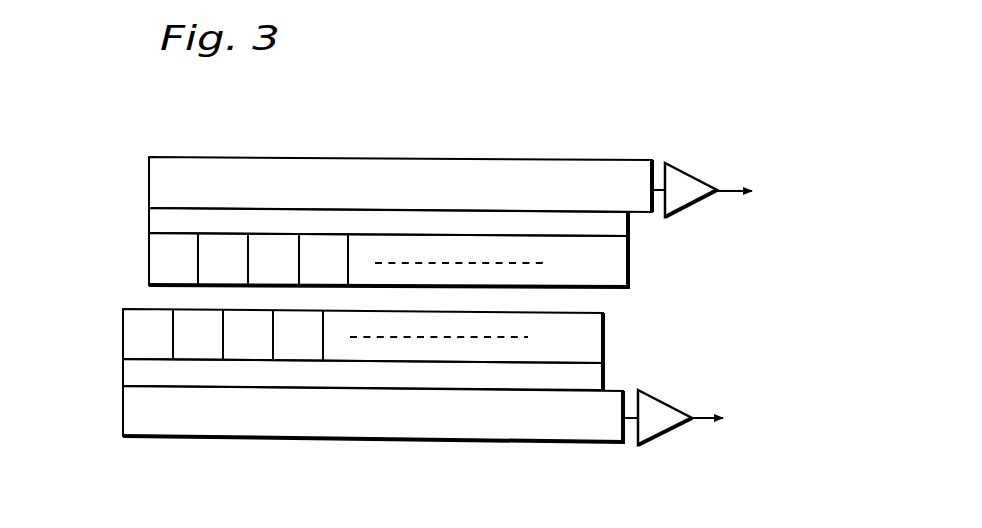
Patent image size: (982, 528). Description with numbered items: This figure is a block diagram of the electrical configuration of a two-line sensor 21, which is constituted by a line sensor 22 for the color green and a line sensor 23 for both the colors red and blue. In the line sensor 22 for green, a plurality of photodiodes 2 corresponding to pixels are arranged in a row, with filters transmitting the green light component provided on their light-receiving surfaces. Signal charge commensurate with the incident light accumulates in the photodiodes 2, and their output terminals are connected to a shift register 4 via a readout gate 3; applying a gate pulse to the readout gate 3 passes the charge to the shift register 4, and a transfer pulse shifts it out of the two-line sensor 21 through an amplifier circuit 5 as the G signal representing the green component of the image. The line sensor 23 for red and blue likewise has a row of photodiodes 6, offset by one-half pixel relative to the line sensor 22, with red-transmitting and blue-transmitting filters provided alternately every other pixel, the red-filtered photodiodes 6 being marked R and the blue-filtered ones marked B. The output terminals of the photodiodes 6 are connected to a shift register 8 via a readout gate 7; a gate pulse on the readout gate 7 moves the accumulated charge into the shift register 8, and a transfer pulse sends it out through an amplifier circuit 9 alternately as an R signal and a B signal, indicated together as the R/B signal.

The photodiodes 2 is at (153, 249).
The readout gate 3 is at (153, 216).
The shift register 4 is at (190, 163).
The amplifier circuit 5 is at (701, 181).
The photodiodes 6 is at (187, 315).
The readout gate 7 is at (127, 368).
The shift register 8 is at (127, 412).
The amplifier circuit 9 is at (679, 411).
The two-line sensor 21 is at (439, 120).
The line sensor for the color green 22 is at (128, 178).
The line sensor for the colors red and blue 23 is at (97, 358).